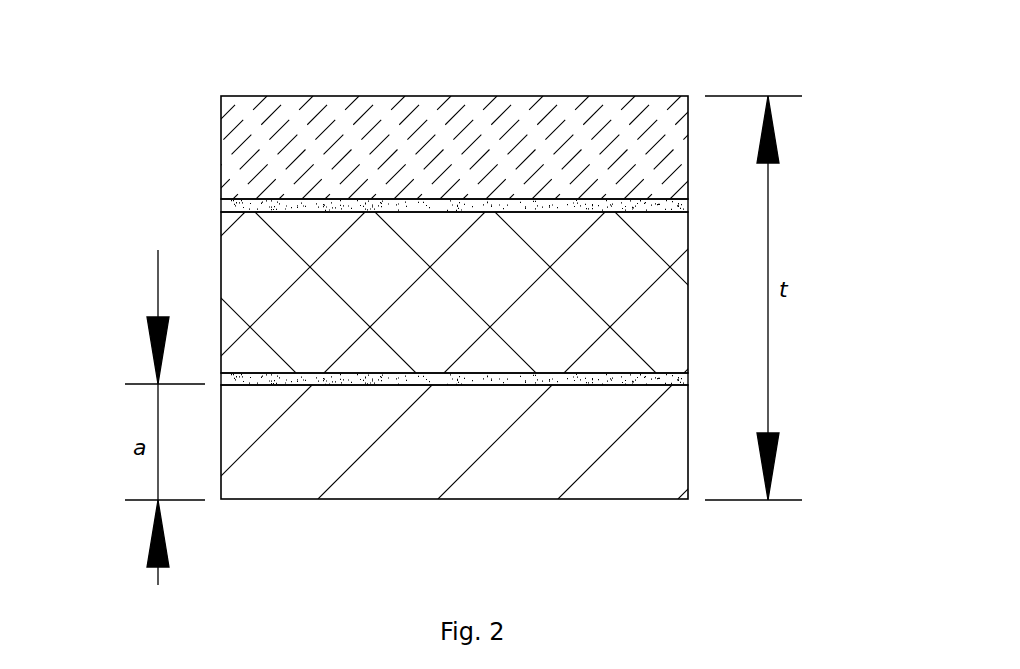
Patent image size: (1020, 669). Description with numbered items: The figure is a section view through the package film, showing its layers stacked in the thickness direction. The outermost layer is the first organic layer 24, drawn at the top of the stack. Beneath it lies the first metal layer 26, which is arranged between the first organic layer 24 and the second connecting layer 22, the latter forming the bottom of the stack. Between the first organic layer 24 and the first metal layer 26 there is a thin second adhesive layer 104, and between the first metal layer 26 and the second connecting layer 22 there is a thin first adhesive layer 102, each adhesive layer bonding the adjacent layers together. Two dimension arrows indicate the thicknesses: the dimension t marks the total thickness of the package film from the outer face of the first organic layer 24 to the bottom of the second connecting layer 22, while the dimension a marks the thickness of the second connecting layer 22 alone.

The second connecting layer 22 is at (558, 466).
The first organic layer 24 is at (553, 159).
The first metal layer 26 is at (555, 324).
The first adhesive layer 102 is at (237, 380).
The second adhesive layer 104 is at (237, 206).